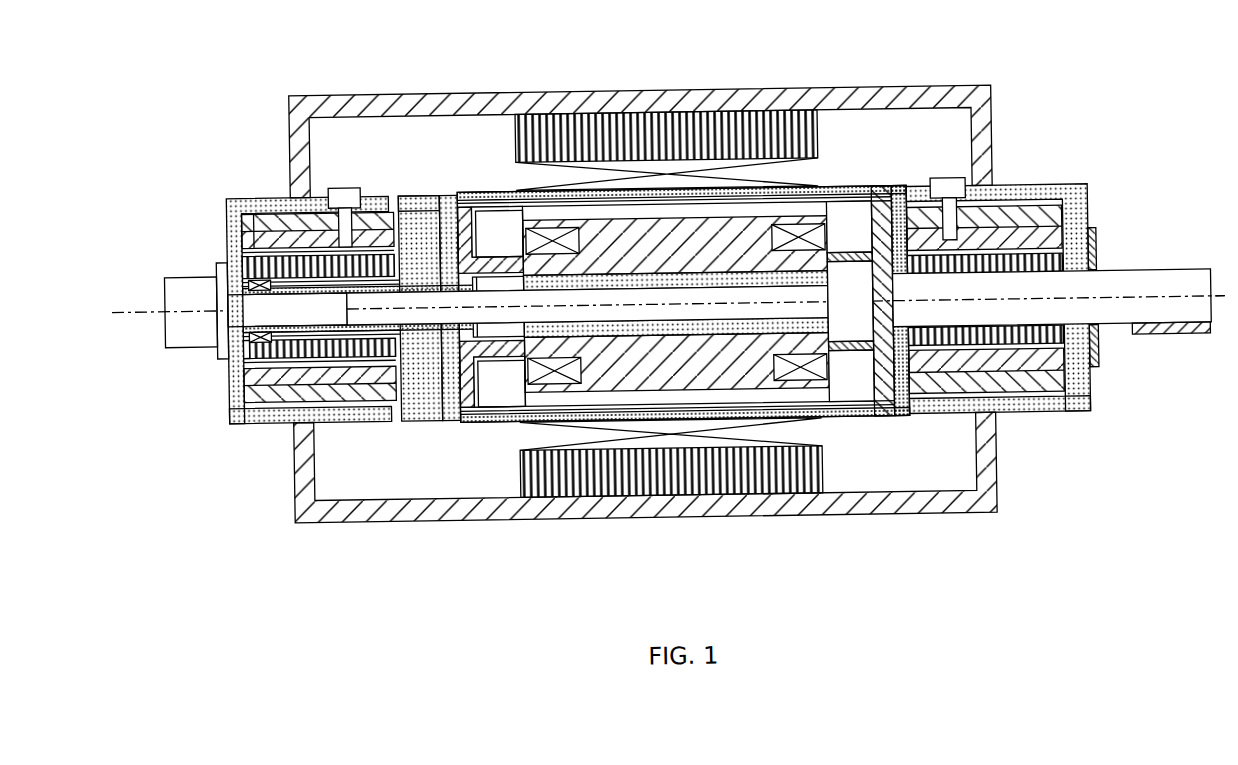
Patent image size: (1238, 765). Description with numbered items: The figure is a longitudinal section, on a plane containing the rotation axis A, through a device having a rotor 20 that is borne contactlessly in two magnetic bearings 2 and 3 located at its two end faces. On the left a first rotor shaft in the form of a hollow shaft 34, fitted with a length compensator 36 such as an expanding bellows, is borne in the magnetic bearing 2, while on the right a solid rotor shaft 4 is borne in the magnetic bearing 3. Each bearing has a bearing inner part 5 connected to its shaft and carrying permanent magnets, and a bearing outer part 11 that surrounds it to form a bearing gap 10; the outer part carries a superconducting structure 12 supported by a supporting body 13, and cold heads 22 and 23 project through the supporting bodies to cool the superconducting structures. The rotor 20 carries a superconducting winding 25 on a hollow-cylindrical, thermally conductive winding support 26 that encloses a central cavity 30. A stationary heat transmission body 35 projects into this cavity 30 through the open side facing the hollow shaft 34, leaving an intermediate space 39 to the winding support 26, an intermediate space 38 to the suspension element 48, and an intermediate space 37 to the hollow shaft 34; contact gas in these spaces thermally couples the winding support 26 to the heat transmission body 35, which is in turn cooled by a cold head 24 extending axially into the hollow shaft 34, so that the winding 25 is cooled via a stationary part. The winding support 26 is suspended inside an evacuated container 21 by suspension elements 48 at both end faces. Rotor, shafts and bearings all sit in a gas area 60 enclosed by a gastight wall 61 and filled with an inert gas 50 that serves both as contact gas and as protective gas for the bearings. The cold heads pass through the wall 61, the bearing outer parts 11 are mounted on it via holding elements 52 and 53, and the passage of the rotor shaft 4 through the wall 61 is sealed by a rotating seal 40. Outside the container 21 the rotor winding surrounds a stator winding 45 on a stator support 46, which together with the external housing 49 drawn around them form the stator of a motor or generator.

The magnetic bearing 2 is at (286, 399).
The magnetic bearing 3 is at (1019, 393).
The rotor shaft 4 is at (1175, 304).
The bearing inner part 5 is at (1093, 254).
The bearing gap 10 is at (261, 249).
The bearing outer part 11 is at (230, 197).
The superconducting structure 12 is at (258, 230).
The supporting body 13 is at (281, 230).
The rotor 20 is at (860, 211).
The container 21 is at (490, 205).
The cold head 22 is at (342, 198).
The cold head 23 is at (947, 202).
The cold head 24 is at (182, 292).
The winding 25 is at (549, 236).
The winding support 26 is at (681, 253).
The central cavity 30 is at (715, 299).
The hollow shaft 34 is at (438, 277).
The heat transmission body 35 is at (653, 320).
The length compensator 36 is at (247, 343).
The intermediate space 37 is at (376, 381).
The intermediate space 38 is at (507, 363).
The intermediate space 39 is at (595, 334).
The rotating seal 40 is at (1097, 359).
The stator winding 45 is at (750, 194).
The stator support 46 is at (615, 147).
The suspension element 48 is at (489, 363).
The housing 49 is at (415, 97).
The gas 50 is at (865, 224).
The holding element 52 is at (412, 197).
The holding element 53 is at (1066, 416).
The gas area 60 is at (432, 379).
The wall 61 is at (226, 419).
The rotation axis A is at (143, 316).